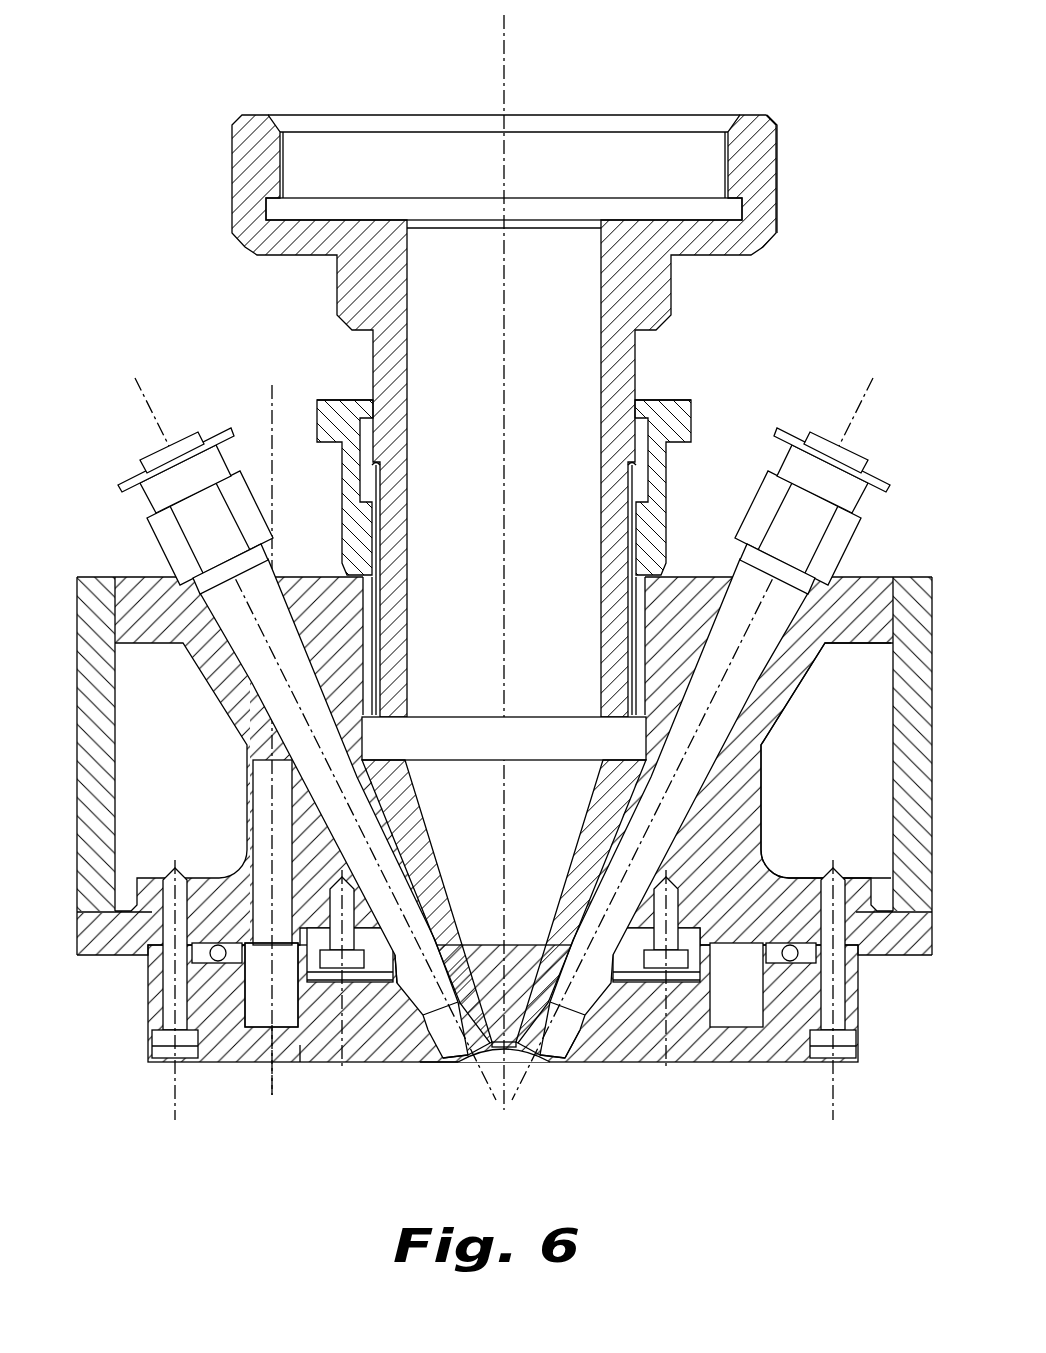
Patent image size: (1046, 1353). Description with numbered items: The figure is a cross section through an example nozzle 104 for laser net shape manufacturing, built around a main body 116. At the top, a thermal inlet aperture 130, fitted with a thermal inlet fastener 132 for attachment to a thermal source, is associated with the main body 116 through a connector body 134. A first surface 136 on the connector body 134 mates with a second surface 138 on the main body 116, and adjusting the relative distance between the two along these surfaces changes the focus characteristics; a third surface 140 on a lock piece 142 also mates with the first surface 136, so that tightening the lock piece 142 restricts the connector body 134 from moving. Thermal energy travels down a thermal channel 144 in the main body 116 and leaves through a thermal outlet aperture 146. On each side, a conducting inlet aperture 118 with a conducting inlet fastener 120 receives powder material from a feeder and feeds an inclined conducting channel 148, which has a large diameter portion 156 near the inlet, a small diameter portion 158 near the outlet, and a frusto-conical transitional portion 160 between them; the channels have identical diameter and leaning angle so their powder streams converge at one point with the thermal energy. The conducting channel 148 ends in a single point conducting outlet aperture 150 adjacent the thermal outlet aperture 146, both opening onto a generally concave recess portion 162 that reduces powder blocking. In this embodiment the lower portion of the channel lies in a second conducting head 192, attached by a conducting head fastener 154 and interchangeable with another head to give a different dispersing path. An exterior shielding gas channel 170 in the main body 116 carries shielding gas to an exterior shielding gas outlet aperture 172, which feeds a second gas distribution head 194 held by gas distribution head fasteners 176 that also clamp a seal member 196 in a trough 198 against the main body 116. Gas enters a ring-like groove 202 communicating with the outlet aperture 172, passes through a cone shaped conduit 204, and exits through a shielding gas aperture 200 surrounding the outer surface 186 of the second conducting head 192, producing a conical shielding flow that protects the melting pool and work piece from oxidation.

The nozzle 104 is at (257, 70).
The main body 116 is at (100, 575).
The conducting inlet aperture 118 is at (178, 448).
The conducting inlet fastener 120 is at (217, 475).
The thermal inlet aperture 130 is at (570, 114).
The thermal inlet fastener 132 is at (728, 160).
The connector body 134 is at (770, 148).
The first surface 136 is at (620, 603).
The second surface 138 is at (655, 600).
The third surface 140 is at (640, 525).
The lock piece 142 is at (695, 420).
The thermal channel 144 is at (440, 847).
The thermal outlet aperture 146 is at (506, 1062).
The conducting channel 148 is at (295, 723).
The conducting outlet aperture 150 is at (478, 1065).
The conducting head fastener 154 is at (735, 872).
The large diameter portion 156 is at (605, 1032).
The small diameter portion 158 is at (560, 1040).
The transitional portion 160 is at (585, 1045).
The recess portion 162 is at (455, 1058).
The exterior shielding gas channel 170 is at (263, 835).
The exterior shielding gas outlet aperture 172 is at (262, 1010).
The gas distribution head fastener 176 is at (848, 1045).
The outer surface 186 is at (318, 1055).
The second conducting head 192 is at (543, 1040).
The second gas distribution head 194 is at (148, 1022).
The seal member 196 is at (205, 985).
The trough 198 is at (215, 944).
The shielding gas aperture 200 is at (403, 1000).
The groove 202 is at (272, 1025).
The cone shaped conduit 204 is at (420, 1062).